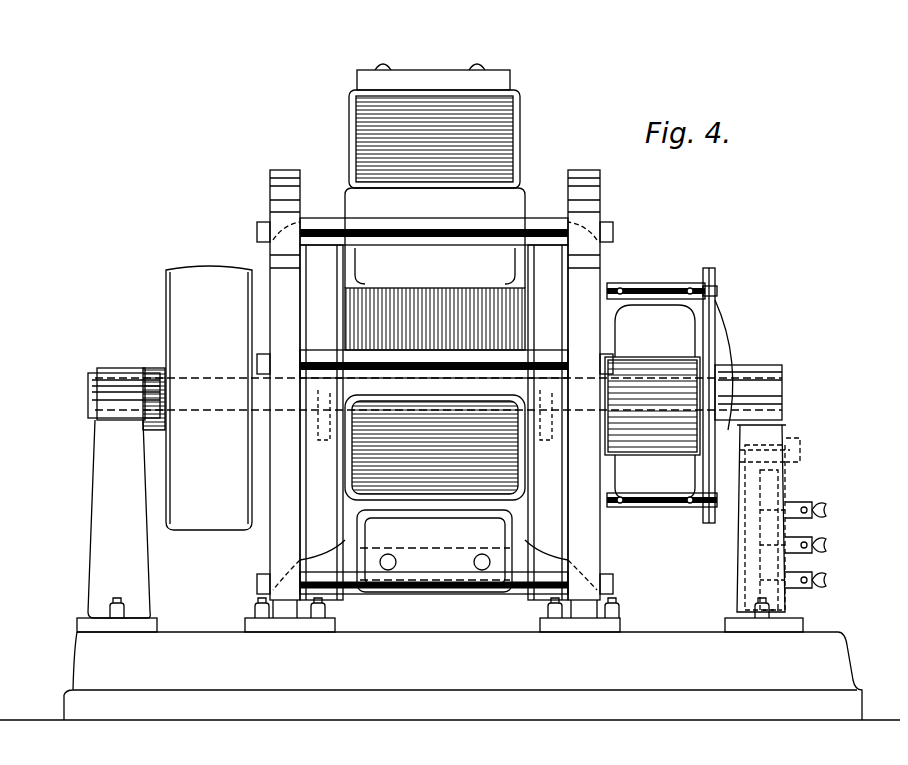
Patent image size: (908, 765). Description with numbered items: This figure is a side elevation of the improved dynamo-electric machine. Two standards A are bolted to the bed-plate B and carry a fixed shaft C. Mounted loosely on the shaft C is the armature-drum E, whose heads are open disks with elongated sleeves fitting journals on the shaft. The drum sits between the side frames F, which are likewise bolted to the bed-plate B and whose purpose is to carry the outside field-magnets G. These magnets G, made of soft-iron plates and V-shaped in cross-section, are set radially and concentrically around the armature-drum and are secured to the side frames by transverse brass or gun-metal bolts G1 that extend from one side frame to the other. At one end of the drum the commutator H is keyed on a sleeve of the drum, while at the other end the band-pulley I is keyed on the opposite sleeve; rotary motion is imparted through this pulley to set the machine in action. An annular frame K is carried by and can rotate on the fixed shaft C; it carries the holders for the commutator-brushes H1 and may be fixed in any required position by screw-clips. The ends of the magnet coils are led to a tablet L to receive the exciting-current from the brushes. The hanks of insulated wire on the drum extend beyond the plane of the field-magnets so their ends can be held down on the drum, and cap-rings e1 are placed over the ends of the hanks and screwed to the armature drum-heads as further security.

The standards A is at (798, 421).
The bed-plate B is at (450, 676).
The fixed shaft C is at (88, 396).
The armature-drum E is at (434, 422).
The side frames F is at (432, 401).
The field-magnets G is at (444, 328).
The transverse bolts G1 is at (436, 399).
The commutator H is at (700, 380).
The commutator-brushes H1 is at (662, 395).
The band-pulley I is at (209, 398).
The annular frame K is at (716, 304).
The tablet L is at (788, 487).
The cap-rings e1 is at (434, 534).